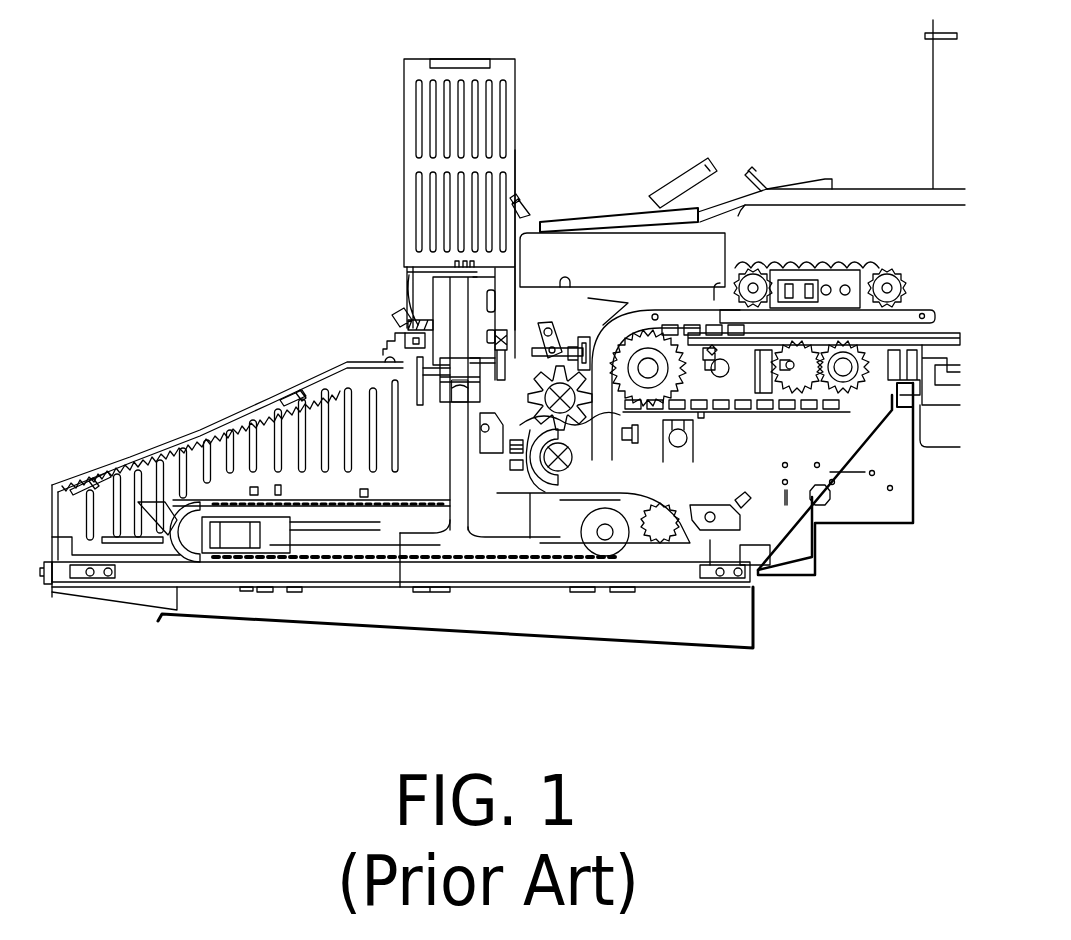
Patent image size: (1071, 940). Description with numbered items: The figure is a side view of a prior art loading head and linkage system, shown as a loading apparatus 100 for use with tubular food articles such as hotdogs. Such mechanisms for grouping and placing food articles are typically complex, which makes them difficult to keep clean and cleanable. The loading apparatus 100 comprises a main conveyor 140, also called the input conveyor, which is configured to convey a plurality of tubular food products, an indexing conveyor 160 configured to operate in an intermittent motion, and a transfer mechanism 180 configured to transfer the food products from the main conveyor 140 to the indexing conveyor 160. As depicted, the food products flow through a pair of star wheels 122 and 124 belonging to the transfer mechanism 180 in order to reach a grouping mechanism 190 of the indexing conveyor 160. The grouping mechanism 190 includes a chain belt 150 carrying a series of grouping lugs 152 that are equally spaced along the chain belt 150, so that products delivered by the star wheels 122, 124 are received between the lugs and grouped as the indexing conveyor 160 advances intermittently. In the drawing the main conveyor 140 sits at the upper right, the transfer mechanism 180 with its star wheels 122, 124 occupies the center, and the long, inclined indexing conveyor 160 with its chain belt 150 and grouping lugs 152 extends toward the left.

The loading apparatus 100 is at (652, 156).
The star wheel 122 is at (572, 365).
The star wheel 124 is at (558, 472).
The main conveyor 140 is at (832, 325).
The chain belt 150 is at (403, 508).
The grouping lugs 152 is at (275, 492).
The indexing conveyor 160 is at (317, 513).
The transfer mechanism 180 is at (521, 415).
The grouping mechanism 190 is at (503, 494).